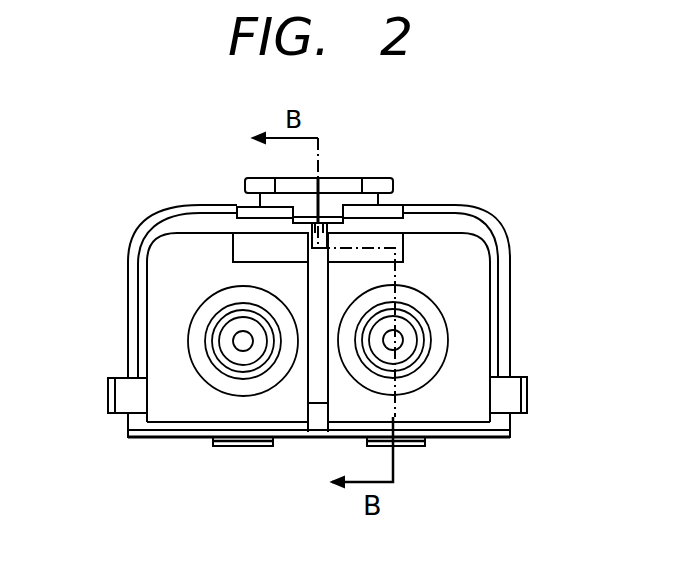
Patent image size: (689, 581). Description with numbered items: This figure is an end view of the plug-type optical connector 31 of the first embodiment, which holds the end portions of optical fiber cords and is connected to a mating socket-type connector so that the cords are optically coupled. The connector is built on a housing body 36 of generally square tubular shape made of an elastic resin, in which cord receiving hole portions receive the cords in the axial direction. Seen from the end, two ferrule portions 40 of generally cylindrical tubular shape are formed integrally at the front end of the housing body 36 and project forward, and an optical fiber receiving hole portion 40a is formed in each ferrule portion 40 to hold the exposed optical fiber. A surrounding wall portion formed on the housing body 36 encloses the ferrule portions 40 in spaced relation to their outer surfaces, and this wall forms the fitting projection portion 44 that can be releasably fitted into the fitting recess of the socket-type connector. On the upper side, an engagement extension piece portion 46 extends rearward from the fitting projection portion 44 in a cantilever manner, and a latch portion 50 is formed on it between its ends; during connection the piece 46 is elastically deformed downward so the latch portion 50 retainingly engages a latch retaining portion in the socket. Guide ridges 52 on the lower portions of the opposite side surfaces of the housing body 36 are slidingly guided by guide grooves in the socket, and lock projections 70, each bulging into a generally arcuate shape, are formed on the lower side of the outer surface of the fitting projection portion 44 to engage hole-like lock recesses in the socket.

The plug-type optical connector 31 is at (506, 157).
The housing body 36 is at (486, 438).
The ferrule portion 40 is at (207, 328).
The optical fiber receiving hole portion 40a is at (243, 341).
The fitting projection portion 44 is at (508, 250).
The engagement extension piece portion 46 is at (378, 178).
The latch portion 50 is at (335, 188).
The guide ridge 52 is at (108, 387).
The lock projection 70 is at (233, 446).